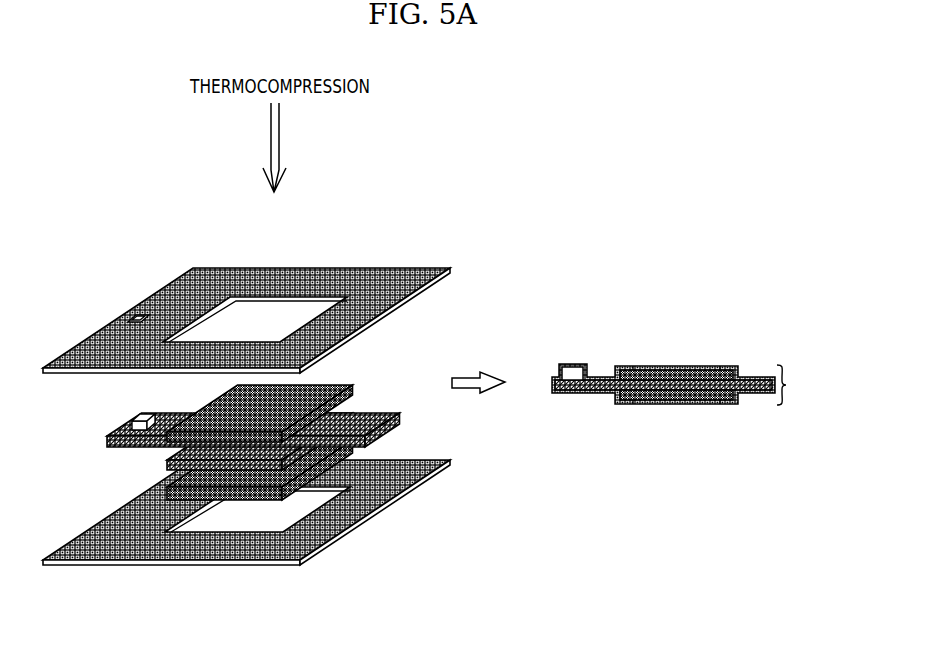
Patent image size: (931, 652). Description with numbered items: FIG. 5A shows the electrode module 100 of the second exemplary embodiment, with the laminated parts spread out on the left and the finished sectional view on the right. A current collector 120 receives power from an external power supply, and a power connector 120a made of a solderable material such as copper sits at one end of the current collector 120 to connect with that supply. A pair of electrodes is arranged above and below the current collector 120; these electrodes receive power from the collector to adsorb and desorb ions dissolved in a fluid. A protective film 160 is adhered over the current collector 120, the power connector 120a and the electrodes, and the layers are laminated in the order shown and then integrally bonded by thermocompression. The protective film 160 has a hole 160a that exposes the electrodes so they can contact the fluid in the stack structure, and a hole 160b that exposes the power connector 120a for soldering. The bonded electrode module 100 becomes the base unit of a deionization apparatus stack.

The electrode module 100 is at (797, 385).
The current collector 120 is at (107, 442).
The power connector 120a is at (130, 420).
The protective film 160 is at (358, 272).
The hole 160a is at (278, 311).
The hole 160b is at (141, 316).